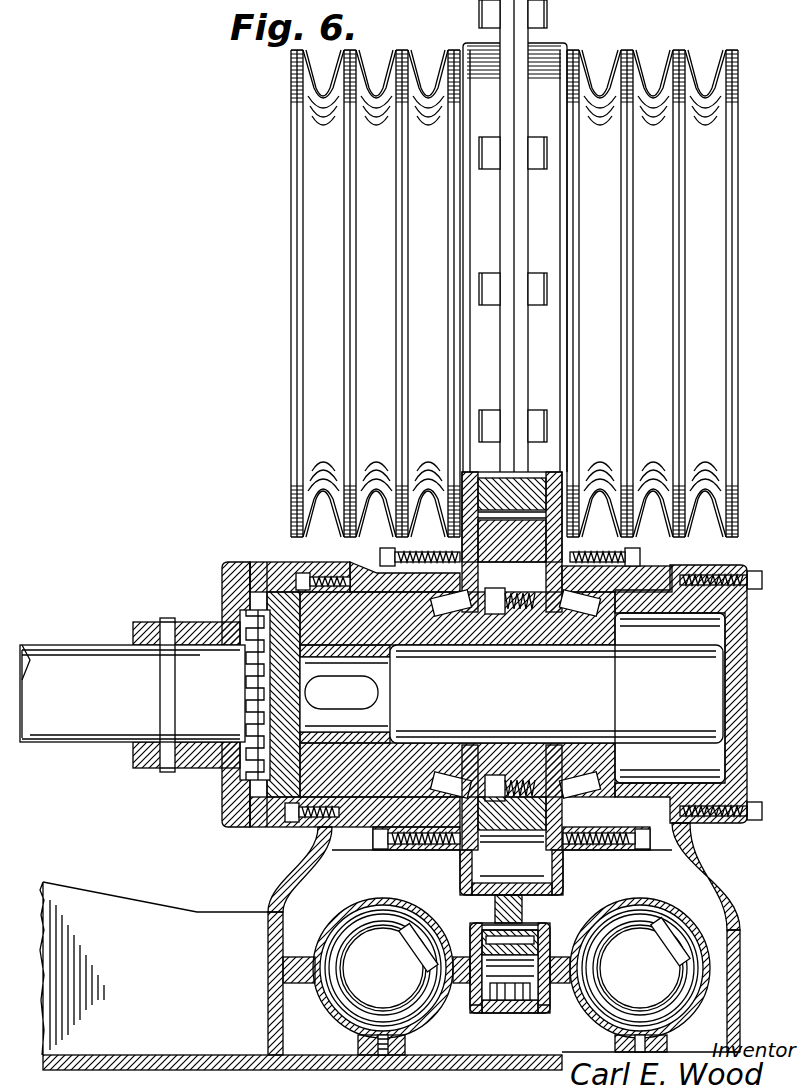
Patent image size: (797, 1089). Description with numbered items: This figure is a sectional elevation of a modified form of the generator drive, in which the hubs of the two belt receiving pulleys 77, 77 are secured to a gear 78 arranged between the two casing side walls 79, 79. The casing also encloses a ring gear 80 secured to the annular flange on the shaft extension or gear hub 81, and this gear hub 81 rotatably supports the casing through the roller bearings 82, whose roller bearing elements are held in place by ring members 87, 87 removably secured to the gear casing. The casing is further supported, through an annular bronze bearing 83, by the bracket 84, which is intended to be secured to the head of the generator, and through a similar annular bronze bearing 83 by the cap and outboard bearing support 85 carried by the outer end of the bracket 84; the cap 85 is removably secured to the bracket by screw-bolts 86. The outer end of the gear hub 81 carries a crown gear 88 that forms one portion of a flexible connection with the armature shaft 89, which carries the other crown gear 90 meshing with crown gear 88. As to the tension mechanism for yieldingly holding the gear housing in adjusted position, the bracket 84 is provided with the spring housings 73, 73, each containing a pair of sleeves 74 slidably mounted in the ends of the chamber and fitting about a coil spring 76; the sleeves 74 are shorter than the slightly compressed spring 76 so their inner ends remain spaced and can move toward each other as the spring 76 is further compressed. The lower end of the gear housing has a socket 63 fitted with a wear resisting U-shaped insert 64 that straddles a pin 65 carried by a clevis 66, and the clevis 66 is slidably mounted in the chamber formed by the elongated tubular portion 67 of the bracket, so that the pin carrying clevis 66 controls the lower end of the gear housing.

The socket 63 is at (520, 932).
The U-shaped insert 64 is at (540, 937).
The pin 65 is at (512, 1000).
The clevis 66 is at (473, 935).
The elongated tubular portion 67 is at (470, 1008).
The spring housing 73 is at (392, 912).
The sleeve 74 is at (370, 900).
The coil spring 76 is at (418, 925).
The belt receiving pulley 77 is at (293, 205).
The gear 78 is at (532, 490).
The casing side wall 79 is at (476, 45).
The ring gear 80 is at (466, 893).
The shaft extension or gear hub 81 is at (545, 743).
The roller bearing 82 is at (445, 775).
The annular bronze bearing 83 is at (366, 826).
The bracket 84 is at (270, 912).
The cap and outboard bearing support 85 is at (747, 668).
The screw-bolt 86 is at (318, 575).
The ring member 87 is at (380, 560).
The crown gear 88 is at (259, 827).
The armature shaft 89 is at (132, 697).
The crown gear 90 is at (222, 590).